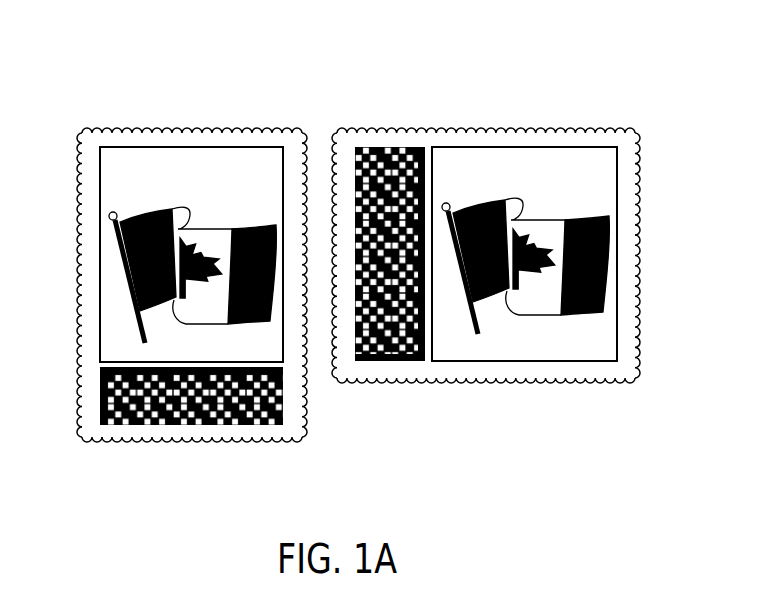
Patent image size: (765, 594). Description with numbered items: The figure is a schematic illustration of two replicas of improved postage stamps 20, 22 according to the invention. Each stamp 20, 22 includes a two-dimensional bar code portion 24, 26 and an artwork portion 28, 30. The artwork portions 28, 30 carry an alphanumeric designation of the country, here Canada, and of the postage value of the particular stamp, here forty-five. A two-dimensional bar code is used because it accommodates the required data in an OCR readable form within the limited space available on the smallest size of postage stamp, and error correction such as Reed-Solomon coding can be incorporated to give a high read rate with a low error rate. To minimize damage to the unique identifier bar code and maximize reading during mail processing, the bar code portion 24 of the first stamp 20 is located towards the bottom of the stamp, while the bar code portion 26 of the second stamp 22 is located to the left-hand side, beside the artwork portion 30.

The postage stamp 20 is at (158, 278).
The postage stamp 22 is at (519, 277).
The two-dimensional bar code portion 24 is at (178, 412).
The two-dimensional bar code portion 26 is at (413, 350).
The artwork portion 28 is at (165, 163).
The artwork portion 30 is at (493, 150).